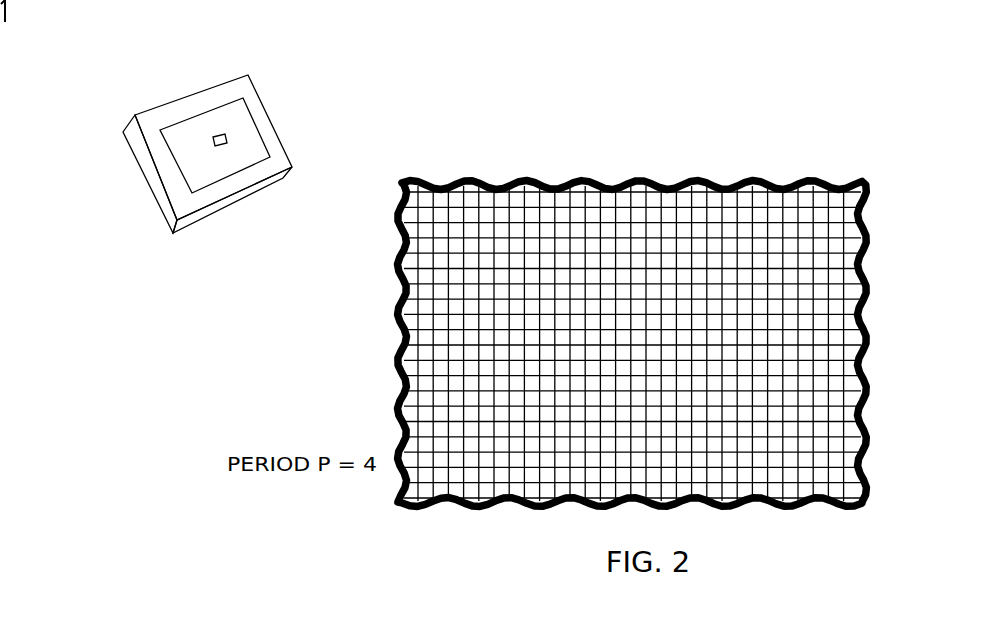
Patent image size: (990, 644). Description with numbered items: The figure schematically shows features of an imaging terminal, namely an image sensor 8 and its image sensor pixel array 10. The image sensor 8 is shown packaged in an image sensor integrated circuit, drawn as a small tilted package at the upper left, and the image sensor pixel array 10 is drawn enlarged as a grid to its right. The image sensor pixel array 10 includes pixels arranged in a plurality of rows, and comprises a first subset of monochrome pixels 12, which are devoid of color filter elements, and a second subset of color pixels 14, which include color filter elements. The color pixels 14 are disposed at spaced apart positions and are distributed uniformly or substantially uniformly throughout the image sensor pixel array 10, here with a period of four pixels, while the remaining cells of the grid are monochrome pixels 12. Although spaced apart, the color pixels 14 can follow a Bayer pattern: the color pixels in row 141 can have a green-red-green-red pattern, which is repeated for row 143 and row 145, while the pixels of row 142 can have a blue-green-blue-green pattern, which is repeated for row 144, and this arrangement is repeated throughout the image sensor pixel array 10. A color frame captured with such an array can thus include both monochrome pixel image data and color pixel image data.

The image sensor 8 is at (255, 82).
The image sensor pixel array 10 is at (227, 138).
The monochrome pixels 12 is at (442, 310).
The color pixels 14 is at (635, 340).
The row 141 is at (838, 213).
The row 142 is at (838, 273).
The row 143 is at (836, 337).
The row 144 is at (836, 398).
The row 145 is at (836, 460).